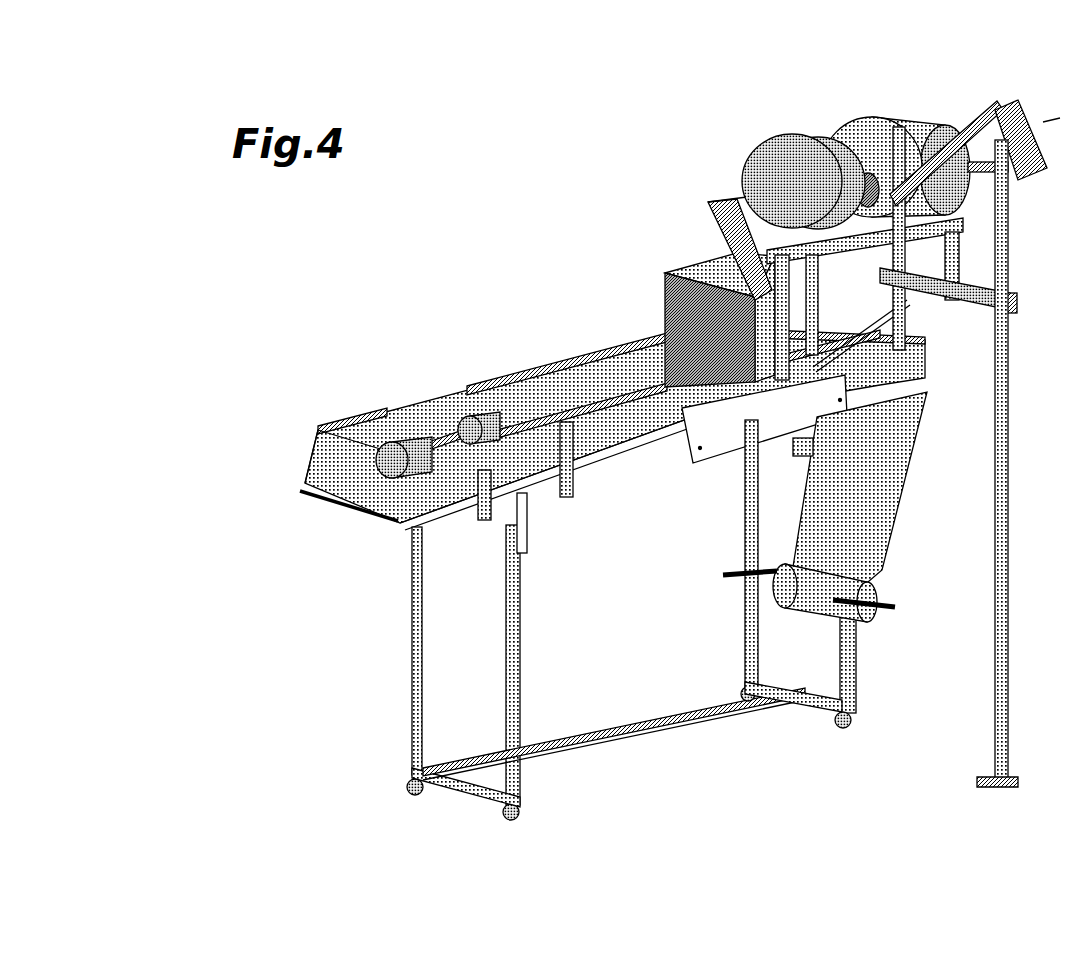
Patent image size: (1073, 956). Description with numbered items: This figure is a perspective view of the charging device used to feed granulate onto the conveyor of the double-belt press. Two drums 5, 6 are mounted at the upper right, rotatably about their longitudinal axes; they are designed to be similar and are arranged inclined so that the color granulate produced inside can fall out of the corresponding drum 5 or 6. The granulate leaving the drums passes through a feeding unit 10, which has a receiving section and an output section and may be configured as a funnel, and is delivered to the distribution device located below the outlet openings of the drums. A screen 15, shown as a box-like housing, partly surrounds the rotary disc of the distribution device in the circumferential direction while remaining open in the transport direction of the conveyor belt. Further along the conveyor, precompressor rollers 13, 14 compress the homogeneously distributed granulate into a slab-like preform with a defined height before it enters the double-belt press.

The drum 5 is at (760, 150).
The drum 6 is at (850, 122).
The feeding unit 10 is at (728, 203).
The precompressor roller 13 is at (392, 445).
The precompressor roller 14 is at (472, 402).
The screen 15 is at (698, 273).